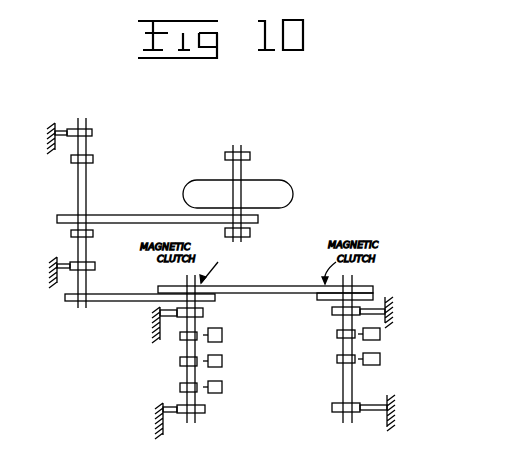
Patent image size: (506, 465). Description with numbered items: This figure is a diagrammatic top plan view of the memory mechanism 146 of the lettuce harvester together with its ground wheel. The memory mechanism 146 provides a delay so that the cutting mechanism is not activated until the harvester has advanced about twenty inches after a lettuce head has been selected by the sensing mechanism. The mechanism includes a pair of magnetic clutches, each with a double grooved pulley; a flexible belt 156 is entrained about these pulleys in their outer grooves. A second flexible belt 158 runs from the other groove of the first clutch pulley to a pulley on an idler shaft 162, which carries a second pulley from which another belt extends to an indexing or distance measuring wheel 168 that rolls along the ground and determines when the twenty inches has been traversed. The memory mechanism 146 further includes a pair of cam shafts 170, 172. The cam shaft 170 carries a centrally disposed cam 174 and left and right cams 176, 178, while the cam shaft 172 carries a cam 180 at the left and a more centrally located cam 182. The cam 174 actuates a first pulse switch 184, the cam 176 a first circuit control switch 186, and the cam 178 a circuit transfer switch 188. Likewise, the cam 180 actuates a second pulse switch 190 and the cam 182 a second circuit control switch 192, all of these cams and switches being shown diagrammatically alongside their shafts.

The memory mechanism 146 is at (107, 397).
The flexible belt 156 is at (268, 285).
The flexible belt 158 is at (105, 295).
The idler shaft 162 is at (86, 183).
The indexing or distance measuring wheel 168 is at (270, 188).
The cam shaft 170 is at (187, 374).
The cam shaft 172 is at (343, 387).
The centrally disposed cam 174 is at (180, 363).
The left cam 176 is at (180, 336).
The right cam 178 is at (180, 389).
The cam 180 is at (337, 333).
The cam 182 is at (338, 360).
The first pulse switch 184 is at (226, 358).
The first circuit control switch 186 is at (222, 331).
The circuit transfer switch 188 is at (223, 388).
The second pulse switch 190 is at (380, 334).
The second circuit control switch 192 is at (382, 362).